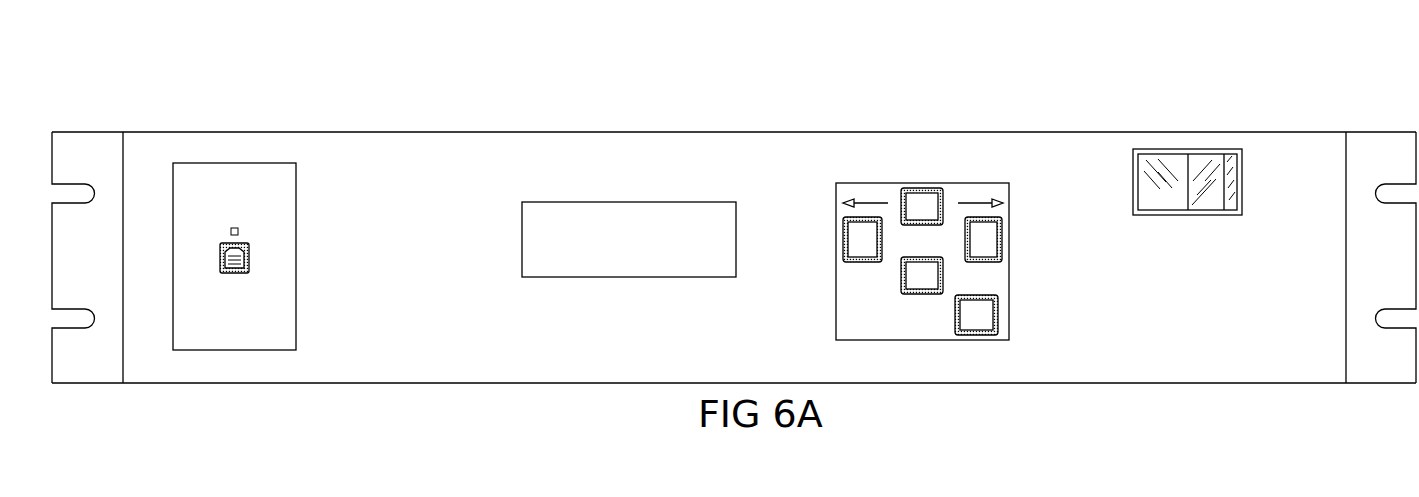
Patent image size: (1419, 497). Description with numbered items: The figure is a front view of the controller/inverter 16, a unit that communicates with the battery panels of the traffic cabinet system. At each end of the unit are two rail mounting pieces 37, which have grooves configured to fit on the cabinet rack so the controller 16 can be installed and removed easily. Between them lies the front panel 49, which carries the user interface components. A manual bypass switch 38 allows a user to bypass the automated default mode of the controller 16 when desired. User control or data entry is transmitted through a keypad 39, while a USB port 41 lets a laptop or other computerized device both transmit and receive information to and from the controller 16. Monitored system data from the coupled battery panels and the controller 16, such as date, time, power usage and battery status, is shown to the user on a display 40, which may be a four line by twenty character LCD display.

The controller/inverter 16 is at (511, 388).
The rail mounting pieces 37 is at (92, 150).
The manual bypass switch 38 is at (1184, 144).
The keypad 39 is at (880, 191).
The display 40 is at (628, 198).
The USB port 41 is at (250, 236).
The front panel 49 is at (469, 152).